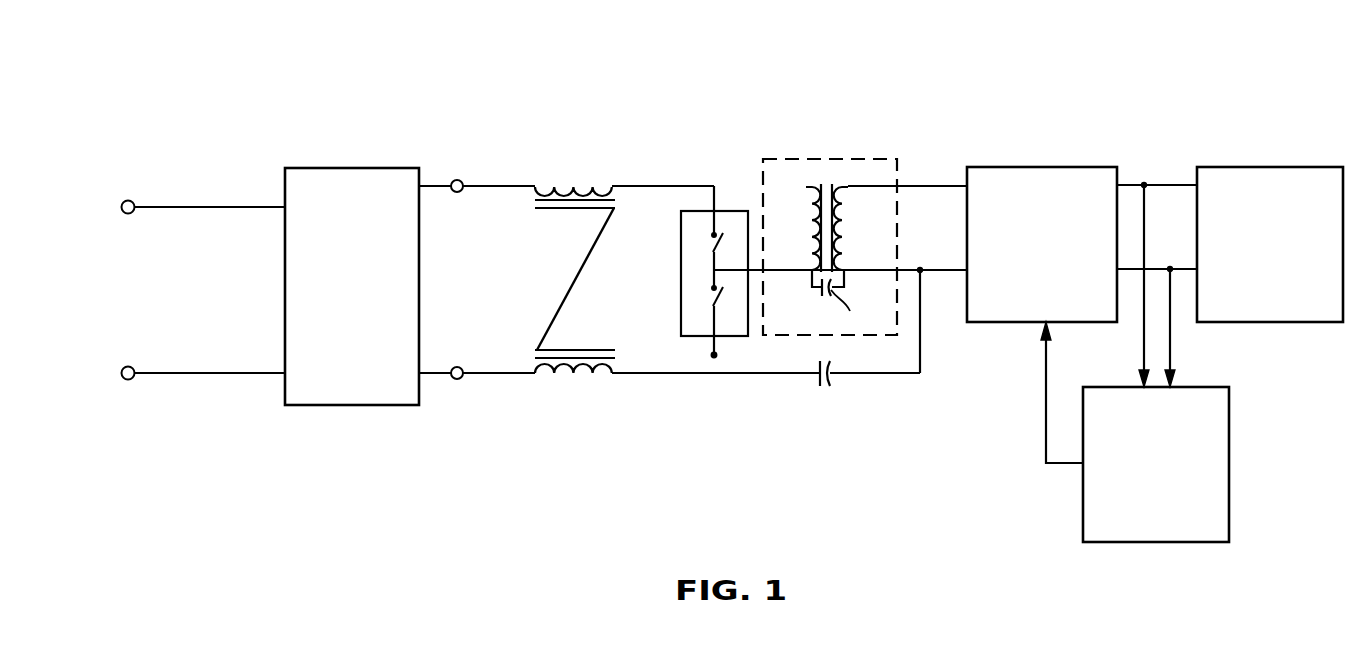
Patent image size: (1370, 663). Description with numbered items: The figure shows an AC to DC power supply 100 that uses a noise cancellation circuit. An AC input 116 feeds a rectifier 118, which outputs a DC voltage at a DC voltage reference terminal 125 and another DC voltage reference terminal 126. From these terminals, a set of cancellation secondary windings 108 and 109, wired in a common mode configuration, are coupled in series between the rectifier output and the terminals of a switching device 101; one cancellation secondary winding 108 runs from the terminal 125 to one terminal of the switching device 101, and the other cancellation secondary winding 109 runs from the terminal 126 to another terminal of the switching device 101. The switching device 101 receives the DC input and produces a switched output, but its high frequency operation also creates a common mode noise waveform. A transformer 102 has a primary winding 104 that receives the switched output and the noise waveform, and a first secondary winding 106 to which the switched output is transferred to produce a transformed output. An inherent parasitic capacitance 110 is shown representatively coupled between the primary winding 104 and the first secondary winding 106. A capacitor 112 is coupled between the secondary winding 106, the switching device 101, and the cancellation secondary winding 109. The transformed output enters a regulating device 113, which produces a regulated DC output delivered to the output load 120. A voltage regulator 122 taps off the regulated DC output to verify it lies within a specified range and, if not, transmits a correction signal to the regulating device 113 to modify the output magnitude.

The AC to DC power supply 100 is at (673, 58).
The switching device 101 is at (681, 285).
The transformer 102 is at (833, 220).
The primary winding 104 is at (812, 191).
The first secondary winding 106 is at (845, 192).
The cancellation secondary winding 108 is at (569, 185).
The cancellation secondary winding 109 is at (567, 378).
The parasitic capacitance 110 is at (808, 157).
The capacitor 112 is at (835, 378).
The regulating device 113 is at (1062, 297).
The AC input 116 is at (185, 290).
The rectifier 118 is at (373, 304).
The output load 120 is at (1290, 282).
The voltage regulator 122 is at (1177, 500).
The DC voltage reference terminal 125 is at (460, 180).
The DC voltage reference terminal 126 is at (459, 380).